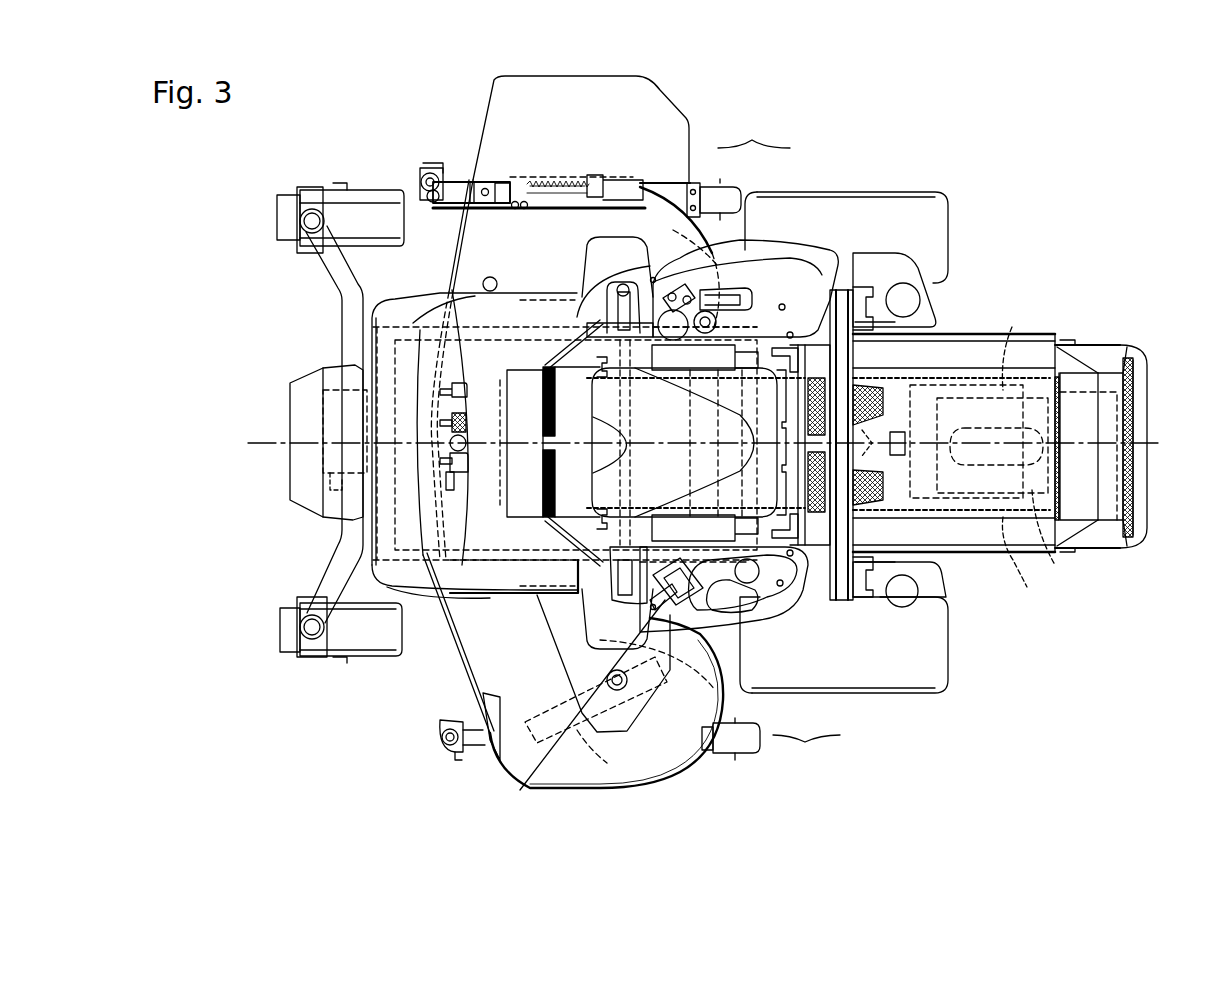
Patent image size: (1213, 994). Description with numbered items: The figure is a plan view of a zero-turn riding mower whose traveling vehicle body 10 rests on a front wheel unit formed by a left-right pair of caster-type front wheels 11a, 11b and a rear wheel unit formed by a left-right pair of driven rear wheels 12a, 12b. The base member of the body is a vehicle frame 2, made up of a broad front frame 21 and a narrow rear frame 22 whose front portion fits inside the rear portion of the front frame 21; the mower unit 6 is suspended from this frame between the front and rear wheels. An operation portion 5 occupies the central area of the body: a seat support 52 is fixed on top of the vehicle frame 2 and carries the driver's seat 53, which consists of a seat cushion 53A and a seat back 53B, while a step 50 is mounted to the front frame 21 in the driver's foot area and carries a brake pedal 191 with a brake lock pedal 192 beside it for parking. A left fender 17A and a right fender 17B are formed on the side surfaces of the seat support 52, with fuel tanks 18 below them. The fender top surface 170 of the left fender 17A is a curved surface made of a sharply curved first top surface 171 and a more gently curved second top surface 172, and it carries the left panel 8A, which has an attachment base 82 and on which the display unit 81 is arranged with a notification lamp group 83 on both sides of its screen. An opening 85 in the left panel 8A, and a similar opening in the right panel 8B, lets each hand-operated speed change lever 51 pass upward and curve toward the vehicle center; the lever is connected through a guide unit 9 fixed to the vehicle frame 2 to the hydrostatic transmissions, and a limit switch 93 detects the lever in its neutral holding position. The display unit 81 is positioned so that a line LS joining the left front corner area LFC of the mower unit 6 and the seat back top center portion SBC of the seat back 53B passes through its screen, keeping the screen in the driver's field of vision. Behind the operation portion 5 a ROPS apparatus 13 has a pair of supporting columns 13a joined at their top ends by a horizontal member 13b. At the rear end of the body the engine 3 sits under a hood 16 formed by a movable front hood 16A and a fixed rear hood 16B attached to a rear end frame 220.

The vehicle frame 2 is at (413, 323).
The engine 3 is at (1053, 538).
The operation portion 5 is at (622, 255).
The mower unit 6 is at (458, 678).
The left panel 8A is at (773, 600).
The right panel 8B is at (770, 298).
The guide unit 9 is at (607, 305).
The traveling vehicle body 10 is at (310, 327).
The front wheel 11a is at (280, 634).
The front wheel 11b is at (280, 217).
The rear wheel 12a is at (943, 644).
The rear wheel 12b is at (940, 238).
The ROPS apparatus 13 is at (848, 283).
The supporting column 13a is at (866, 295).
The horizontal member 13b is at (855, 535).
The hood 16 is at (1057, 336).
The movable hood 16A is at (980, 350).
The fixed hood 16B is at (1107, 372).
The left fender 17A is at (578, 607).
The right fender 17B is at (573, 285).
The fuel tank 18 is at (900, 263).
The front frame 21 is at (458, 272).
The rear frame 22 is at (1027, 456).
The step 50 is at (495, 573).
The speed change lever 51 is at (567, 337).
The seat support 52 is at (803, 325).
The driver's seat 53 is at (578, 386).
The seat cushion 53A is at (514, 576).
The seat back 53B is at (785, 402).
The display unit 81 is at (677, 563).
The attachment base 82 is at (637, 600).
The notification lamp group 83 is at (660, 585).
The opening 85 is at (652, 346).
The limit switch 93 is at (620, 287).
The fender top surface 170 is at (779, 436).
The first top surface 171 is at (640, 272).
The second top surface 172 is at (758, 270).
The brake pedal 191 is at (465, 427).
The brake lock pedal 192 is at (447, 487).
The rear end frame 220 is at (1143, 383).
The seat back top center portion SBC is at (732, 428).
The line LS is at (605, 754).
The left front corner area LFC is at (510, 790).